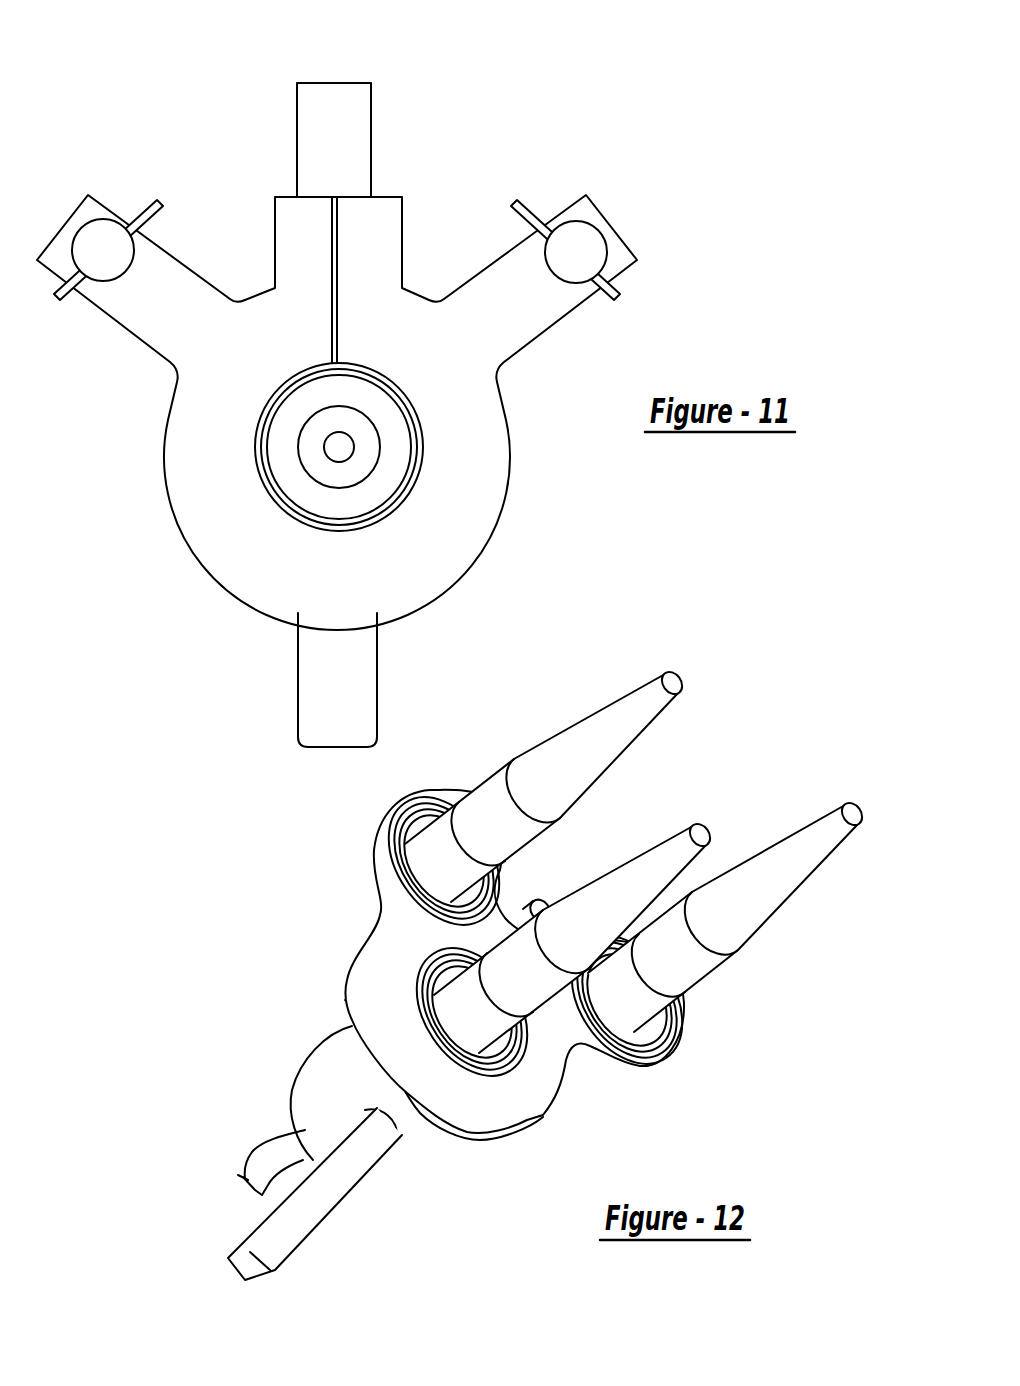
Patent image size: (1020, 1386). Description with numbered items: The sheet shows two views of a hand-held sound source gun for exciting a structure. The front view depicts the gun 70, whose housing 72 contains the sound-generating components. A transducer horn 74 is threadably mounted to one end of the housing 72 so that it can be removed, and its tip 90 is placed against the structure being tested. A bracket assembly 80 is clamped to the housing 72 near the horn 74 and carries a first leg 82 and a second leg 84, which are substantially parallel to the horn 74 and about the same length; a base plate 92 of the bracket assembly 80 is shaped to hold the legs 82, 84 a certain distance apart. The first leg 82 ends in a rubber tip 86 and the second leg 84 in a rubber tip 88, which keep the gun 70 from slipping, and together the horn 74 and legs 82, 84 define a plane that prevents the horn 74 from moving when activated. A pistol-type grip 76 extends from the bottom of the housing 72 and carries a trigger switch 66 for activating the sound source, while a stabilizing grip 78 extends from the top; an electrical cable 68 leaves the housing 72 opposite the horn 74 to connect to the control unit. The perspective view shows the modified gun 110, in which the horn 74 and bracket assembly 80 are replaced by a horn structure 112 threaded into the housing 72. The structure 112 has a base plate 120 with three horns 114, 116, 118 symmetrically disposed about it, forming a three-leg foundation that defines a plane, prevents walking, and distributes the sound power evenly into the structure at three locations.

In FIG. 11, the hand-held sound source gun 70 is at (493, 123).
In FIG. 11, the transducer horn 74 is at (312, 455).
In FIG. 11, the pistol-type grip 76 is at (378, 670).
In FIG. 12, the pistol-type grip 76 is at (308, 1216).
In FIG. 11, the stabilizing grip 78 is at (315, 83).
In FIG. 12, the stabilizing grip 78 is at (541, 902).
In FIG. 11, the bracket assembly 80 is at (498, 515).
In FIG. 11, the first leg 82 is at (576, 252).
In FIG. 11, the second leg 84 is at (120, 275).
In FIG. 11, the rubber tip 86 is at (593, 237).
In FIG. 11, the rubber tip 88 is at (102, 250).
In FIG. 11, the tip 90 is at (339, 448).
In FIG. 11, the base plate 92 is at (465, 458).
In FIG. 12, the hand-held gun 110 is at (778, 713).
In FIG. 12, the horn structure 112 is at (540, 1112).
In FIG. 12, the horn 114 is at (540, 747).
In FIG. 12, the horn 116 is at (661, 841).
In FIG. 12, the horn 118 is at (770, 883).
In FIG. 12, the base plate 120 is at (393, 962).
In FIG. 12, the housing 72 is at (318, 1045).
In FIG. 12, the trigger switch 66 is at (378, 1158).
In FIG. 12, the electrical cable 68 is at (255, 1135).